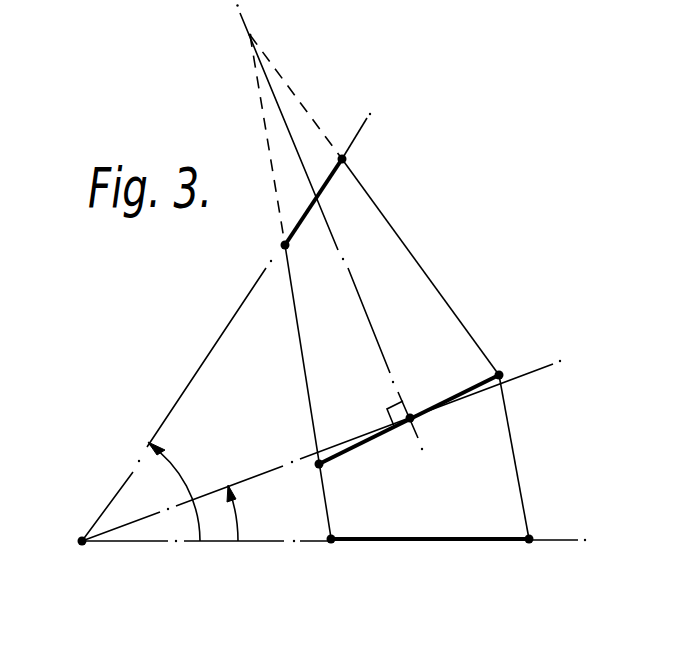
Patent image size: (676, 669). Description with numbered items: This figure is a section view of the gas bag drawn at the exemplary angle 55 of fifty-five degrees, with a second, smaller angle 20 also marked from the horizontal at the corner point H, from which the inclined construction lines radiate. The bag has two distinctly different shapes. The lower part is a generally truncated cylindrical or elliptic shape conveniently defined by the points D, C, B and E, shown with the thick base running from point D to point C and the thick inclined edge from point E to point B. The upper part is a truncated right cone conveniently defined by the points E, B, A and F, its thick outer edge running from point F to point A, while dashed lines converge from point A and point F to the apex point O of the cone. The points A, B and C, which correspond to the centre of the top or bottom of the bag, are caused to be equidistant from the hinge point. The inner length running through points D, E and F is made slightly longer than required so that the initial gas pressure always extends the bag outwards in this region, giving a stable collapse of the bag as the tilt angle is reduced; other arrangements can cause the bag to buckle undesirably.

The center point O is at (233, 44).
The point A is at (354, 155).
The point F is at (271, 246).
The point B is at (508, 358).
The point E is at (310, 475).
The point D is at (320, 527).
The point C is at (540, 527).
The point H is at (71, 542).
The exemplary tilt angle 55 is at (184, 491).
The 20 degree angle 20 is at (252, 513).